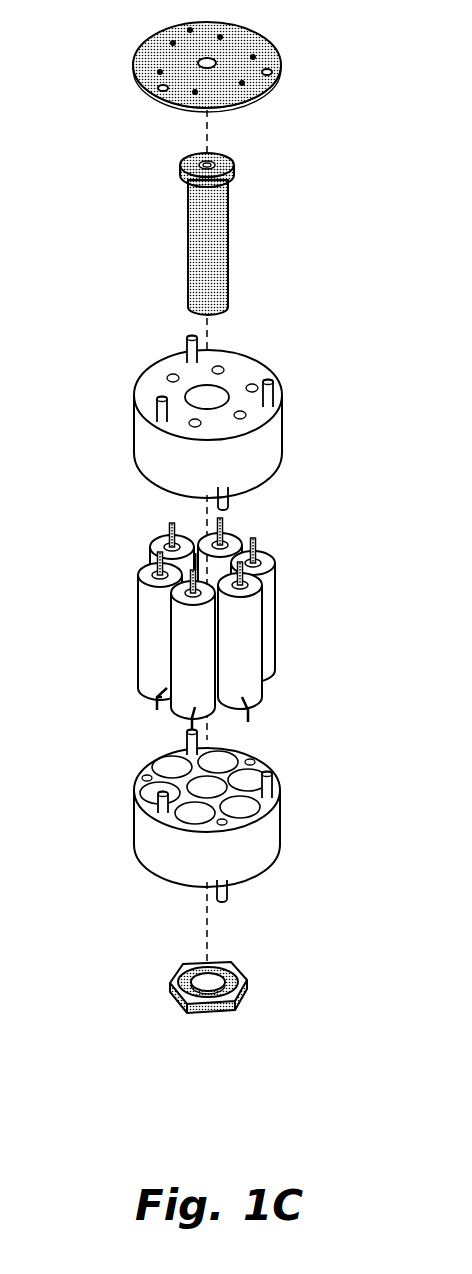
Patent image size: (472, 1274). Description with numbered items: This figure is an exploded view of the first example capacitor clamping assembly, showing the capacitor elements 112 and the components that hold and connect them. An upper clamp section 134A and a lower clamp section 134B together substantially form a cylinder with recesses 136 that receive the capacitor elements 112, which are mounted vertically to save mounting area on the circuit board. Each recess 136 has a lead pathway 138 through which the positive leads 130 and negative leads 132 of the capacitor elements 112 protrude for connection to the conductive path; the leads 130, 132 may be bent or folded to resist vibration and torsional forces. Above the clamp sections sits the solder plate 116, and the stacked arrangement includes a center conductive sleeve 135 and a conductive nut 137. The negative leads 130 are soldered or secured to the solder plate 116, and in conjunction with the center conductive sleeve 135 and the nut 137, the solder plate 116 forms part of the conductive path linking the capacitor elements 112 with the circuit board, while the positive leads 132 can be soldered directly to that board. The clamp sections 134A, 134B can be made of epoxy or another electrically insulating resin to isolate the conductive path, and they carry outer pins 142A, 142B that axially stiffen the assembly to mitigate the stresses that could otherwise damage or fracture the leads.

The solder plate 116 is at (245, 40).
The center conductive sleeve 135 is at (185, 235).
The outer pins 142A is at (186, 352).
The lead pathways 138 is at (253, 383).
The upper clamp section 134A is at (173, 411).
The negative leads 132 is at (168, 530).
The capacitor elements 112 is at (128, 626).
The positive leads 130 is at (148, 703).
The lower clamp section 134B is at (183, 822).
The recesses 136 is at (267, 770).
The outer pins 142B is at (228, 885).
The conductive nut 137 is at (218, 962).